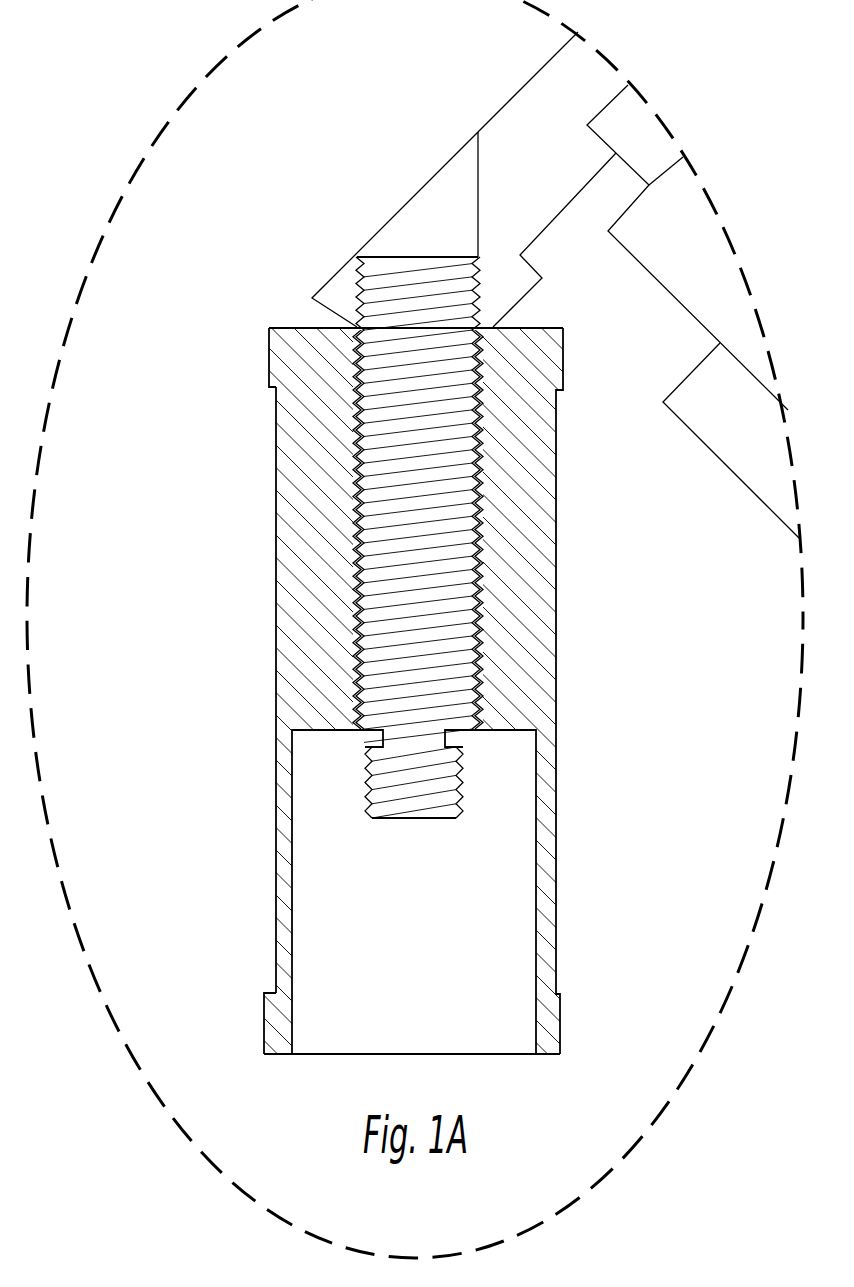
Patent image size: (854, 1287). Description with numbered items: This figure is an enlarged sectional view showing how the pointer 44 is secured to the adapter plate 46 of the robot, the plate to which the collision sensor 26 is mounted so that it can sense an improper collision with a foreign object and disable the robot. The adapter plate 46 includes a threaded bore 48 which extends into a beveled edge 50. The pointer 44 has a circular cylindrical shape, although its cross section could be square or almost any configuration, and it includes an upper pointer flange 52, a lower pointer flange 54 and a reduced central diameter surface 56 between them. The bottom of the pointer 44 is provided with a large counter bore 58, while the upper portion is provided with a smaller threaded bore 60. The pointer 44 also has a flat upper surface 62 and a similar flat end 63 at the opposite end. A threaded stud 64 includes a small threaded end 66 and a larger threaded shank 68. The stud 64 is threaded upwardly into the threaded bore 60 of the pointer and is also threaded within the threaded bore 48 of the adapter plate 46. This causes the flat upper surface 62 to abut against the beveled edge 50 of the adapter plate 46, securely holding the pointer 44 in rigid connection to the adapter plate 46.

The collision sensor 26 is at (710, 453).
The pointer 44 is at (557, 533).
The adapter plate 46 is at (497, 108).
The threaded bore 48 is at (358, 296).
The beveled edge 50 is at (320, 342).
The upper pointer flange 52 is at (269, 376).
The lower pointer flange 54 is at (264, 996).
The reduced central diameter surface 56 is at (276, 800).
The large counter bore 58 is at (535, 950).
The smaller threaded bore 60 is at (362, 546).
The flat upper surface 62 is at (538, 327).
The flat end 63 is at (457, 1054).
The threaded stud 64 is at (423, 823).
The small threaded end 66 is at (368, 785).
The larger threaded shank 68 is at (425, 267).